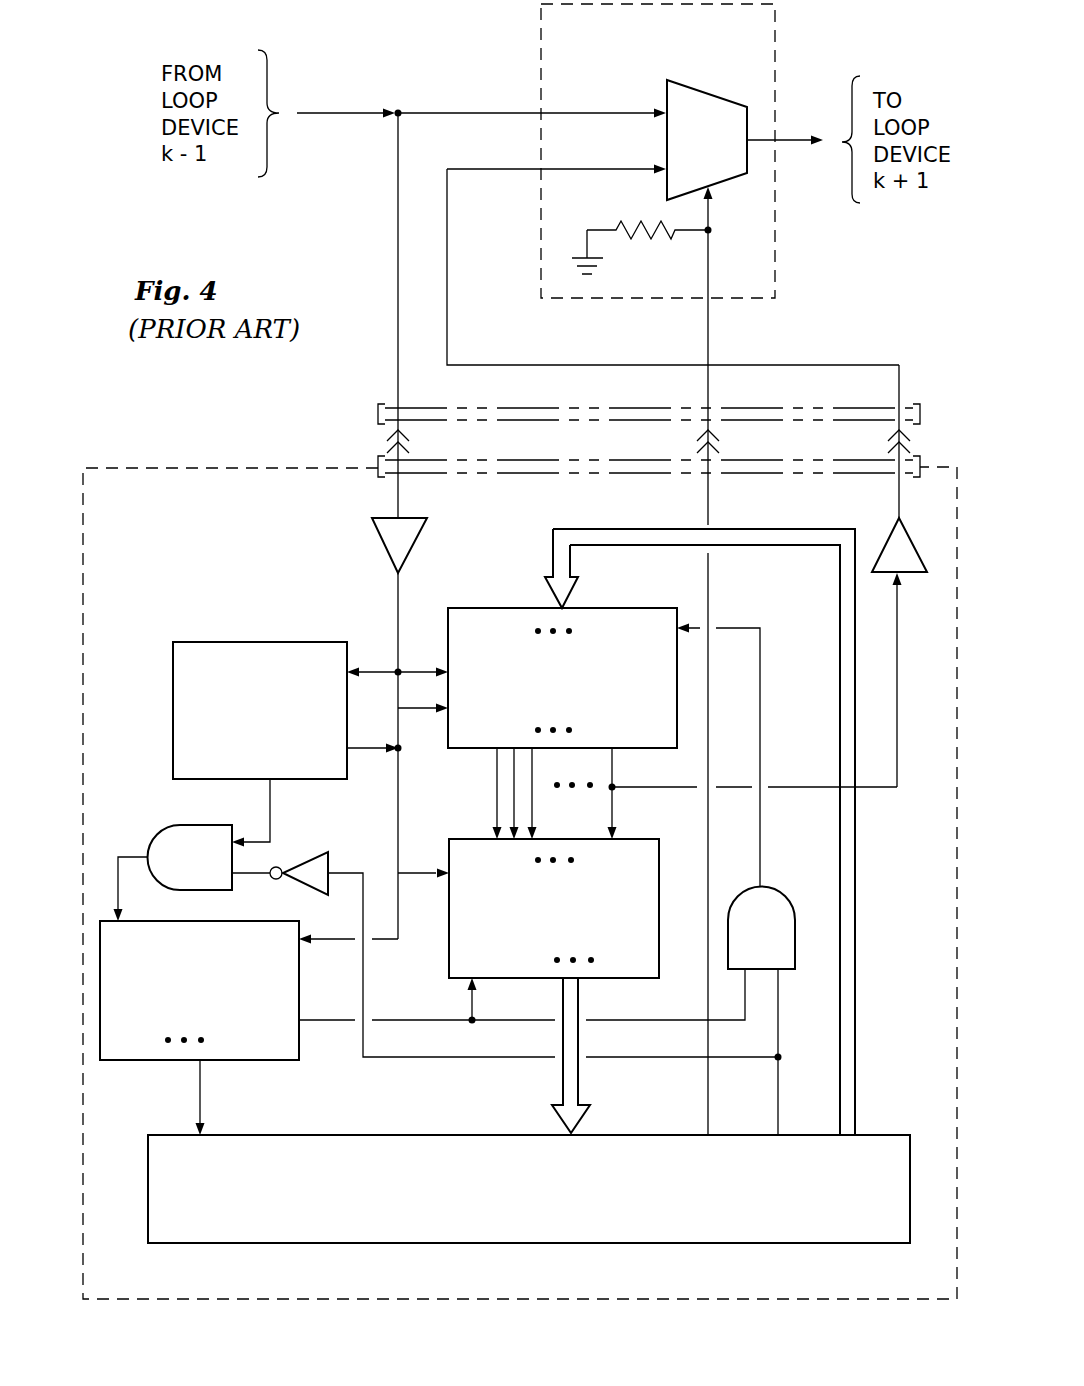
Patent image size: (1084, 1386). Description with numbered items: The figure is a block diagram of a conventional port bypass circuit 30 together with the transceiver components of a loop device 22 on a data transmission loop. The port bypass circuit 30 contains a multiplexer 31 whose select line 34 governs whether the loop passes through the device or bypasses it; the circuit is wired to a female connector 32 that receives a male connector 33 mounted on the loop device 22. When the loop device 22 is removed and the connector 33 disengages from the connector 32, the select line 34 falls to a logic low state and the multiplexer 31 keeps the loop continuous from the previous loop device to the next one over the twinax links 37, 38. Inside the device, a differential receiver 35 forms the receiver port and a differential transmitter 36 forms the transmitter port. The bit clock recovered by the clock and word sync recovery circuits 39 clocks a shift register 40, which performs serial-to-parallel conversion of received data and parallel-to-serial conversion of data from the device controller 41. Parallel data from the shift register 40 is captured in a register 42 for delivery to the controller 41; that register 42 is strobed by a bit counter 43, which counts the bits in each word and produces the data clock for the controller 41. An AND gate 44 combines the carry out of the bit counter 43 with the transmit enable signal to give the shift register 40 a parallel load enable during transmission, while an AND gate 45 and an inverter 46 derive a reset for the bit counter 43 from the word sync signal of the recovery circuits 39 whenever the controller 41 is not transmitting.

The loop device 22 is at (172, 462).
The port bypass circuit 30 is at (780, 19).
The multiplexer 31 is at (722, 98).
The female connector 32 is at (921, 408).
The male connector 33 is at (921, 461).
The select line 34 is at (708, 334).
The differential receiver 35 is at (381, 546).
The differential transmitter 36 is at (889, 538).
The link 37 is at (337, 111).
The link 38 is at (791, 140).
The clock and word sync recovery circuits 39 is at (255, 642).
The shift register 40 is at (472, 608).
The device controller 41 is at (845, 1244).
The register 42 is at (463, 838).
The bit counter 43 is at (143, 1062).
The AND gate 44 is at (778, 887).
The AND gate 45 is at (168, 826).
The inverter 46 is at (313, 852).